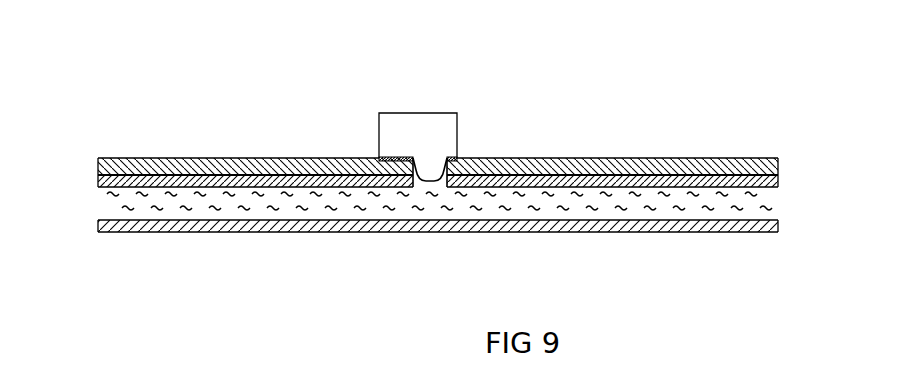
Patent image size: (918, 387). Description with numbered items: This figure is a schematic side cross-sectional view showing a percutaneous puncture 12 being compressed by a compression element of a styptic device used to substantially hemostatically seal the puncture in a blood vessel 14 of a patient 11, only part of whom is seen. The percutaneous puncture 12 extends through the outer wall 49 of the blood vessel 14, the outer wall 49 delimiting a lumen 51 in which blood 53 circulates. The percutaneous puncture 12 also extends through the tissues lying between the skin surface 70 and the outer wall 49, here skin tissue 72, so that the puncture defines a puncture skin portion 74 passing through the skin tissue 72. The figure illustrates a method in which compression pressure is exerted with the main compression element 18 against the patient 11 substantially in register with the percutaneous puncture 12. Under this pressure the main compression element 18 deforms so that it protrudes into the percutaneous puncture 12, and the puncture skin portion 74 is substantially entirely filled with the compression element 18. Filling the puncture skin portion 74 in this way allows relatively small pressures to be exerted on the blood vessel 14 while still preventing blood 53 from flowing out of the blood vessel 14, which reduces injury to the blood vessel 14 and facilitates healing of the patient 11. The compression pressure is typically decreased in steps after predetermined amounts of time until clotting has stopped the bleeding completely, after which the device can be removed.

The patient 11 is at (173, 125).
The percutaneous puncture 12 is at (446, 176).
The blood vessel 14 is at (375, 237).
The main compression element 18 is at (407, 102).
The outer wall 49 is at (483, 182).
The lumen 51 is at (540, 220).
The blood 53 is at (705, 207).
The skin surface 70 is at (573, 158).
The skin tissue 72 is at (607, 163).
The puncture skin portion 74 is at (378, 158).